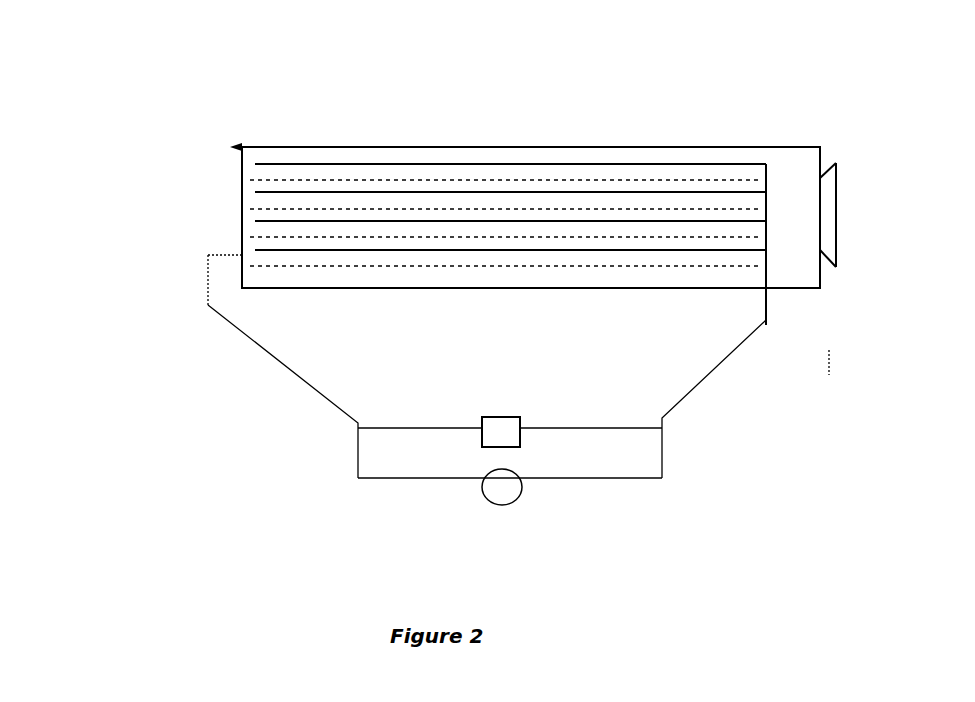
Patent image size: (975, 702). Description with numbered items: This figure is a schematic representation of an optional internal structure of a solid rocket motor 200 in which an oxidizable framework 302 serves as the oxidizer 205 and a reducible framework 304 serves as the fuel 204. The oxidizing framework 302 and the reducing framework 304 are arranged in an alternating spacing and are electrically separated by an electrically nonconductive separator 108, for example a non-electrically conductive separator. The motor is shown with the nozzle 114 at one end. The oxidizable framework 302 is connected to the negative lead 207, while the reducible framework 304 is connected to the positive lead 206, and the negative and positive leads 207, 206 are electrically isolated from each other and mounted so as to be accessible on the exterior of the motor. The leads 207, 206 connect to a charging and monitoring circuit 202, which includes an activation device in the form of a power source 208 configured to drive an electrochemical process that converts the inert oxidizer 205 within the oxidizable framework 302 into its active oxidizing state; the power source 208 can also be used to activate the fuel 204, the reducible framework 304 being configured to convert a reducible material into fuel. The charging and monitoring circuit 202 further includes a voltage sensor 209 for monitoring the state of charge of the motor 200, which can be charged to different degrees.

The motor 200 is at (236, 78).
The electrically nonconductive separator 108 is at (246, 214).
The oxidizable framework 302 is at (692, 154).
The reducible framework 304 is at (368, 282).
The fuel 204 is at (767, 272).
The nozzle 114 is at (836, 218).
The oxidizer 205 is at (242, 236).
The positive lead 206 is at (298, 378).
The negative lead 207 is at (712, 372).
The charging and monitoring circuit 202 is at (358, 509).
The power source 208 is at (520, 417).
The voltage sensor 209 is at (522, 498).